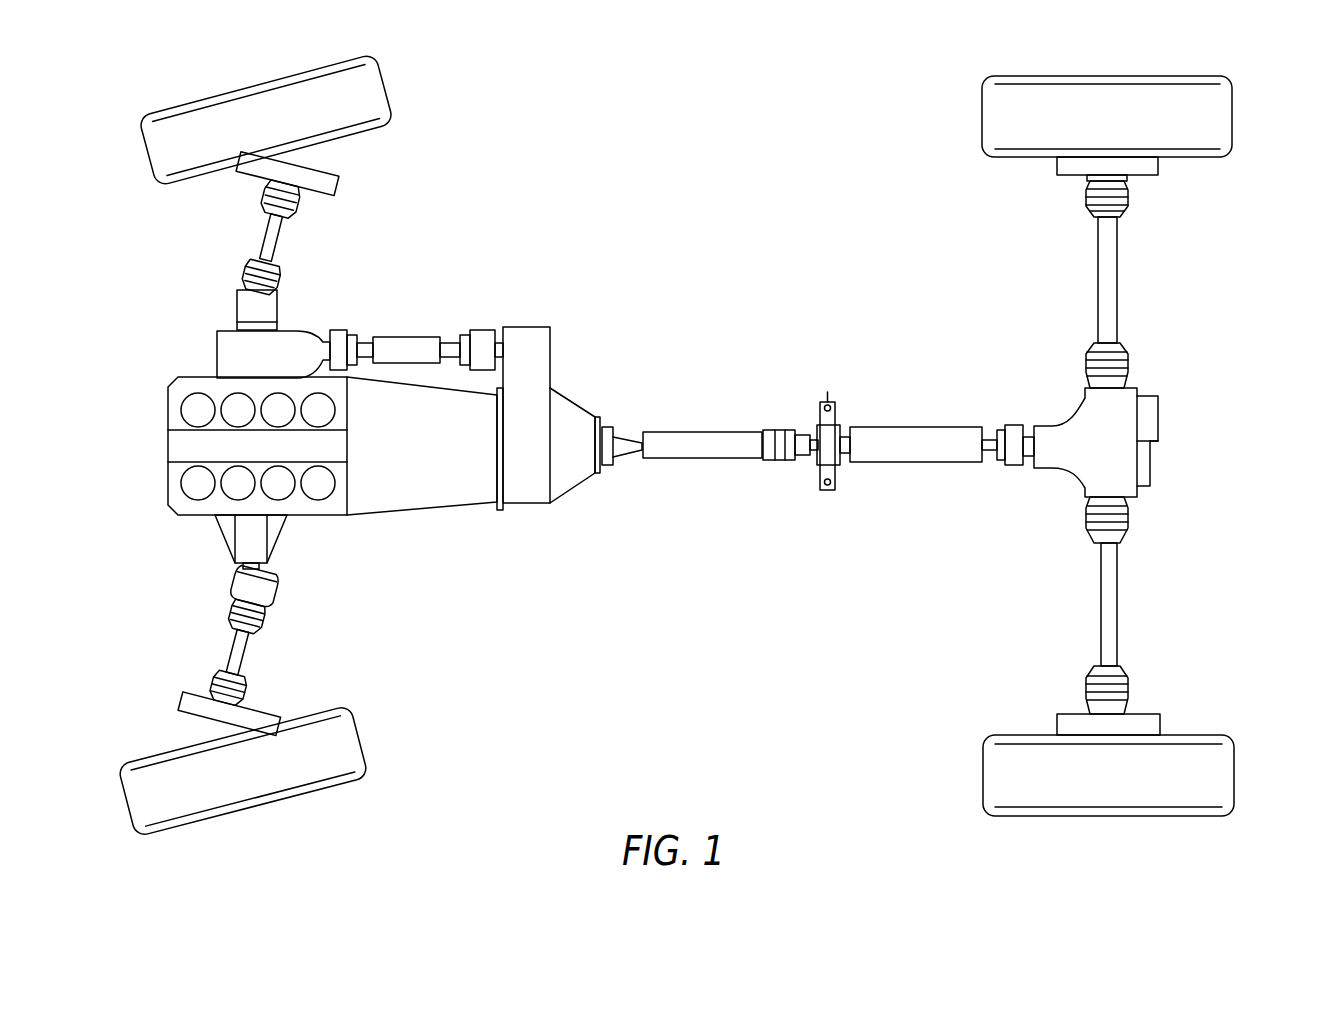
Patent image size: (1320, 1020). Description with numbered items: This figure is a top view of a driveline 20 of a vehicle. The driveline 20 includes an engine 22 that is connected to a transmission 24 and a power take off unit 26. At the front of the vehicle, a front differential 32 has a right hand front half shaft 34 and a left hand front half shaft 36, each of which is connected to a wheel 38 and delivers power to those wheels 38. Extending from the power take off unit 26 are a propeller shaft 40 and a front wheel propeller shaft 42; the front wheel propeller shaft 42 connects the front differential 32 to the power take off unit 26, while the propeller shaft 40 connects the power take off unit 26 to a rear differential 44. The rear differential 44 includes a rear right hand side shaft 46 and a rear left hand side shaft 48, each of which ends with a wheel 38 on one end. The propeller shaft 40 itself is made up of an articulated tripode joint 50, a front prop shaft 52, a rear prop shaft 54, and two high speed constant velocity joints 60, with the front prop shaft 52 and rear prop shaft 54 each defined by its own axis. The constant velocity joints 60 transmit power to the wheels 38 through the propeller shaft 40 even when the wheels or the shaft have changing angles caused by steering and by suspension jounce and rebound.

The driveline 20 is at (693, 252).
The engine 22 is at (190, 445).
The transmission 24 is at (415, 492).
The power take off unit 26 is at (527, 490).
The front differential 32 is at (282, 341).
The right hand front half shaft 34 is at (262, 236).
The left hand front half shaft 36 is at (240, 648).
The wheel 38 is at (372, 92).
The propeller shaft 40 is at (758, 360).
The front wheel propeller shaft 42 is at (405, 343).
The rear differential 44 is at (1118, 452).
The rear right hand side shaft 46 is at (1110, 262).
The rear left hand side shaft 48 is at (1110, 620).
The articulated tripode joint 50 is at (780, 432).
The front prop shaft 52 is at (710, 462).
The rear prop shaft 54 is at (889, 434).
The high speed constant velocity joint 60 is at (300, 202).